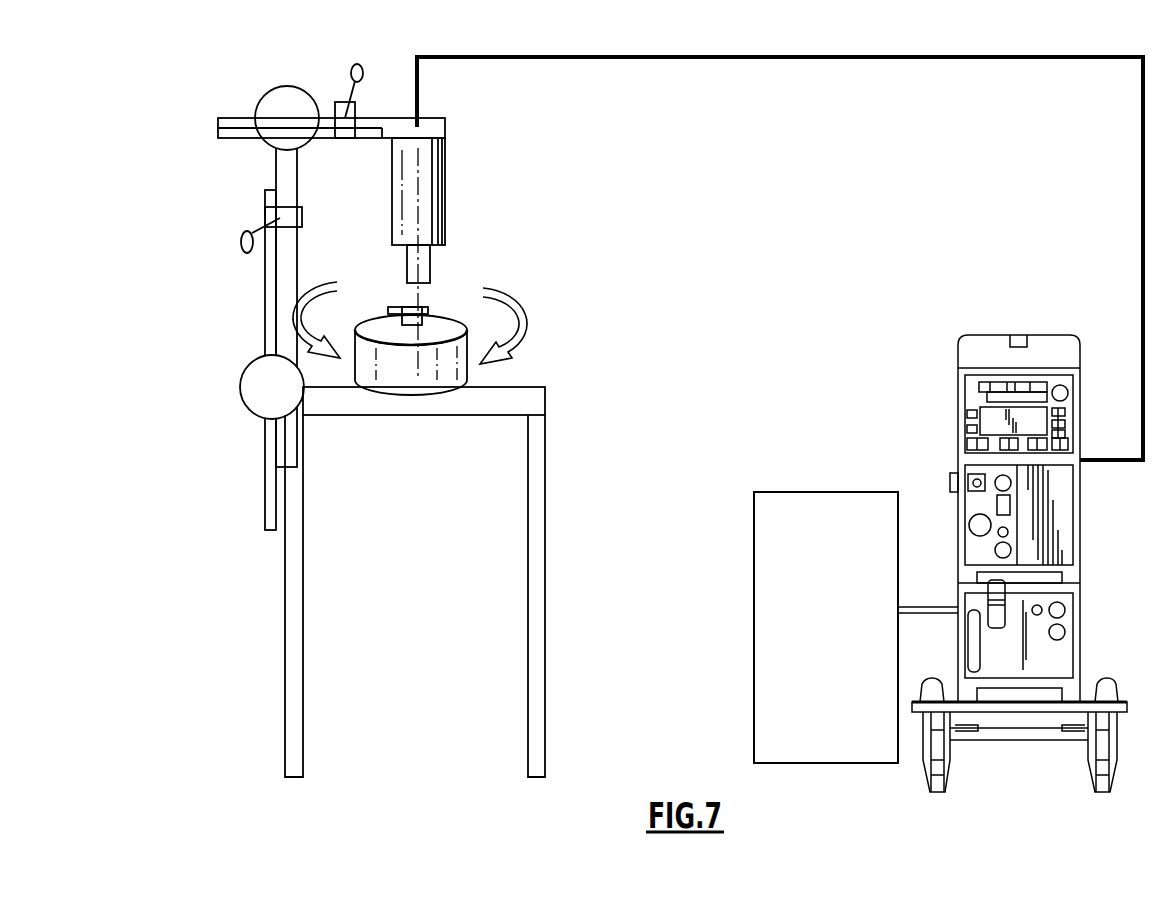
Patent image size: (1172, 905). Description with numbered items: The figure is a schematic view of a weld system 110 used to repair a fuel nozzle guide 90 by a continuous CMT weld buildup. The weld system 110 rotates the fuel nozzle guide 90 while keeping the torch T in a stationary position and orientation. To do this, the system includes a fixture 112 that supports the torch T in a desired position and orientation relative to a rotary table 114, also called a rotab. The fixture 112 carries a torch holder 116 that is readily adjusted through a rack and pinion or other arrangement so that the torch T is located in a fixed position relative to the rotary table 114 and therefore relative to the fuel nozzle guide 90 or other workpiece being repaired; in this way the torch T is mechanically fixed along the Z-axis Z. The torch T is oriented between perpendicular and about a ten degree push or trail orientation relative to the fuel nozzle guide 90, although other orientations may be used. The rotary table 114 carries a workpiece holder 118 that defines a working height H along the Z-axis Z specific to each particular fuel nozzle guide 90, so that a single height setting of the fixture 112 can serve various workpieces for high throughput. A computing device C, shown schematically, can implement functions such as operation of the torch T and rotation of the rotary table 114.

The weld system 110 is at (955, 41).
The fixture 112 is at (250, 446).
The rotary table 114 is at (427, 380).
The torch holder 116 is at (329, 123).
The workpiece holder 118 is at (447, 330).
The fuel nozzle guide 90 is at (413, 322).
The torch T is at (430, 177).
The Z-axis Z is at (420, 222).
The working height H is at (398, 252).
The computing device C is at (841, 476).